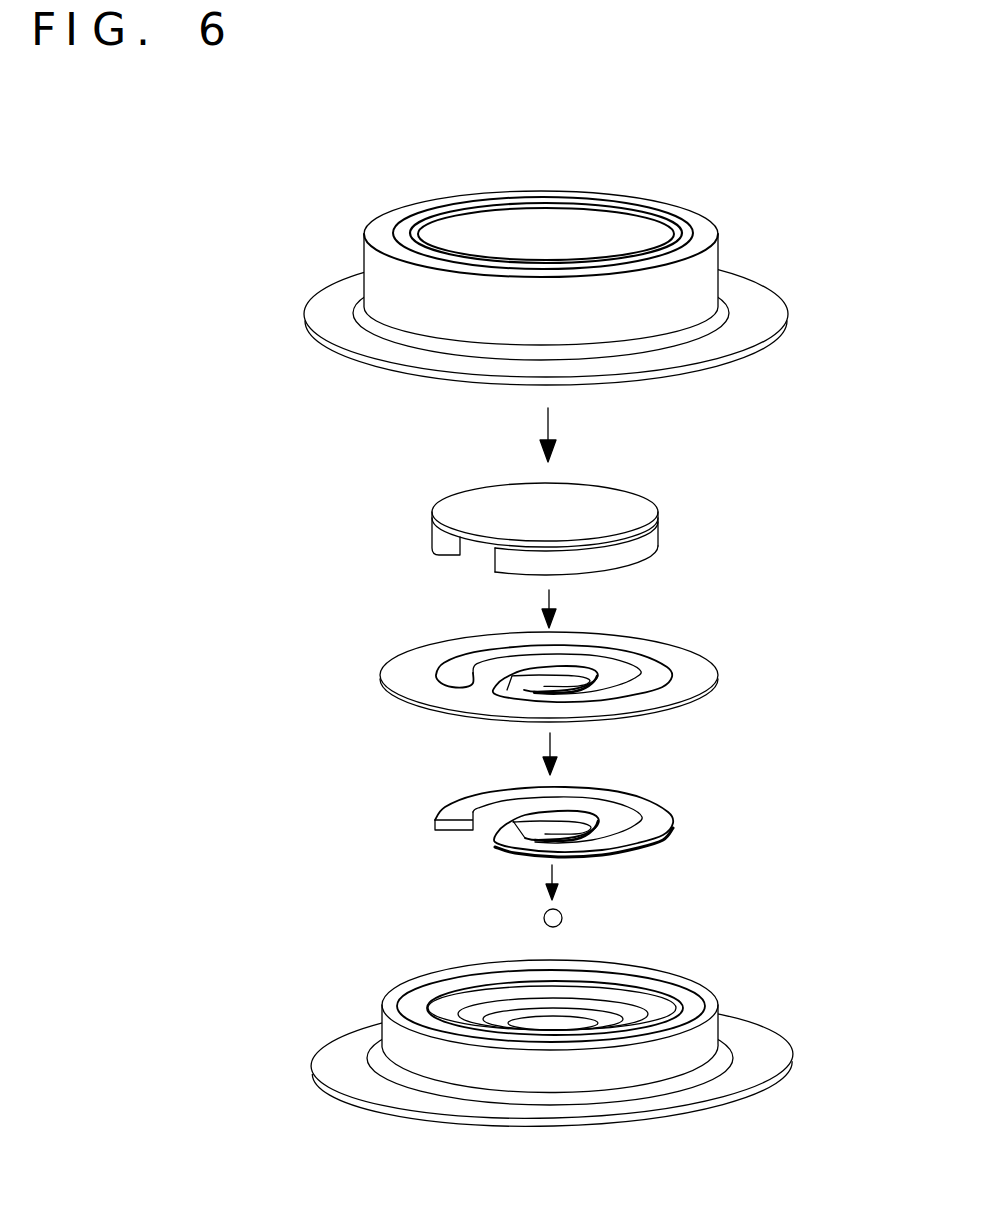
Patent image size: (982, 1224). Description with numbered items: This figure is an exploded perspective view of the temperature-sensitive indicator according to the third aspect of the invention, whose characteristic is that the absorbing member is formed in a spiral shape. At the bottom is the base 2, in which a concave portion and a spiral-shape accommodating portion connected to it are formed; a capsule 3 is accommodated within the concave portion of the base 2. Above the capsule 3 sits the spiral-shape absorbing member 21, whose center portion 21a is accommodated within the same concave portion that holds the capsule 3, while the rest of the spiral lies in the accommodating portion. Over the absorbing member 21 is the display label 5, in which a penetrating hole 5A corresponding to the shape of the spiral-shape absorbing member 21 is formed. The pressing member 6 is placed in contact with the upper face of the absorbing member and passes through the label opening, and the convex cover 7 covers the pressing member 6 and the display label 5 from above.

The convex cover 7 is at (767, 293).
The pressing member 6 is at (640, 510).
The display label 5 is at (702, 668).
The penetrating hole 5A is at (525, 698).
The spiral-shape absorbing member 21 is at (662, 820).
The center portion 21a is at (513, 823).
The capsule 3 is at (562, 917).
The base 2 is at (773, 1060).